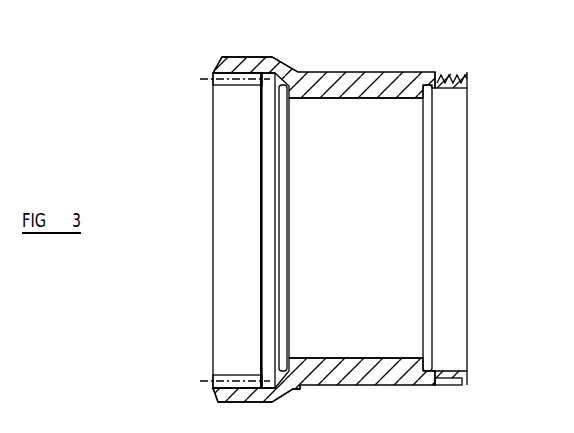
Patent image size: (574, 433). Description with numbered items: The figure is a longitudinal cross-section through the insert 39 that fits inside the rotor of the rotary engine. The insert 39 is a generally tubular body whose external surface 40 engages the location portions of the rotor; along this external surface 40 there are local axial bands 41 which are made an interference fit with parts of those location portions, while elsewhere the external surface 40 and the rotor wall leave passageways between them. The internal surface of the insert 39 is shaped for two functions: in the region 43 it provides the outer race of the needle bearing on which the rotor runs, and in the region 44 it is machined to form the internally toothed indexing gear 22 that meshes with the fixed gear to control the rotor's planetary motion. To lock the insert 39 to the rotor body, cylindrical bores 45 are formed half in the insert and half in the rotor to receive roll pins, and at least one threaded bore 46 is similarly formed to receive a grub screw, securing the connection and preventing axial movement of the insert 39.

The indexing gear 22 is at (228, 373).
The insert 39 is at (407, 63).
The external surface 40 is at (234, 57).
The local axial bands 41 is at (297, 71).
The outer race region 43 is at (380, 104).
The indexing gear region 44 is at (241, 98).
The cylindrical bore 45 is at (462, 386).
The threaded bore 46 is at (467, 72).